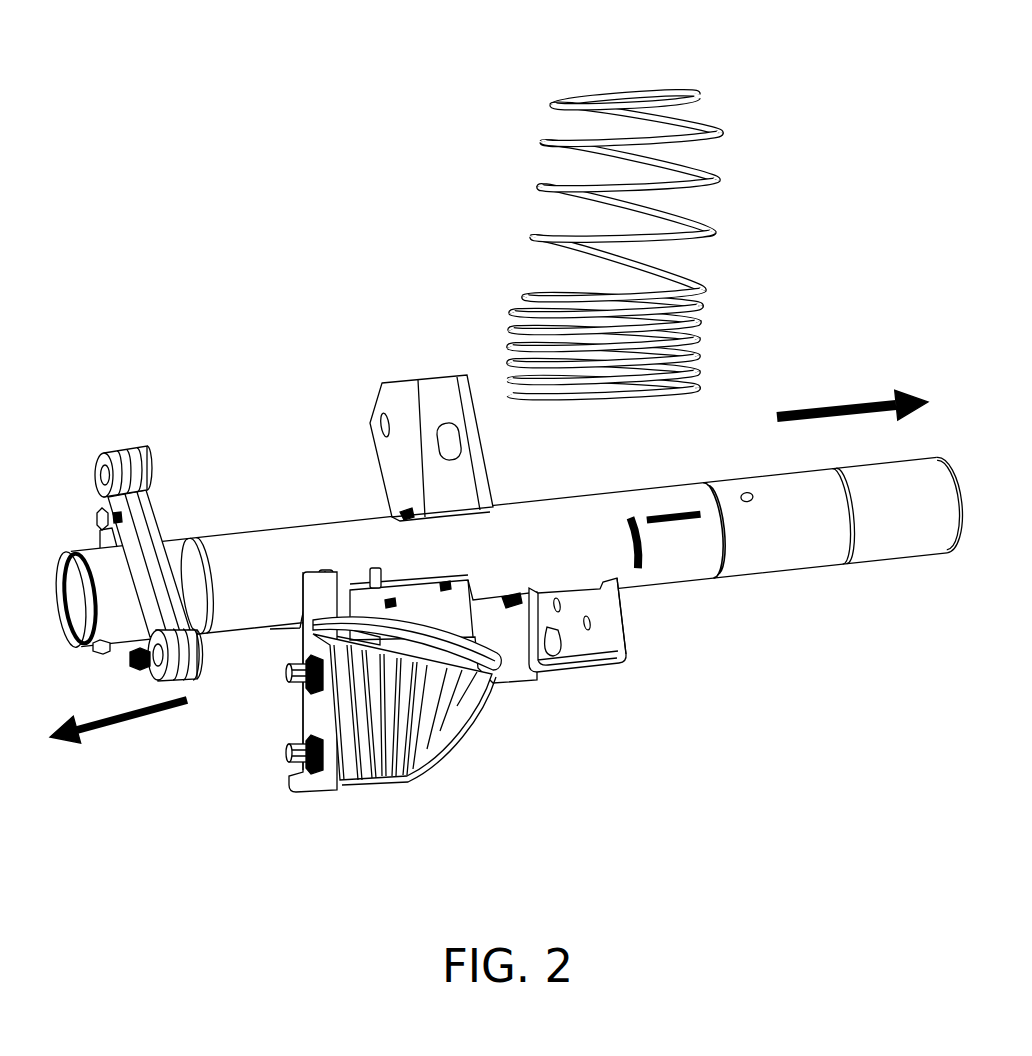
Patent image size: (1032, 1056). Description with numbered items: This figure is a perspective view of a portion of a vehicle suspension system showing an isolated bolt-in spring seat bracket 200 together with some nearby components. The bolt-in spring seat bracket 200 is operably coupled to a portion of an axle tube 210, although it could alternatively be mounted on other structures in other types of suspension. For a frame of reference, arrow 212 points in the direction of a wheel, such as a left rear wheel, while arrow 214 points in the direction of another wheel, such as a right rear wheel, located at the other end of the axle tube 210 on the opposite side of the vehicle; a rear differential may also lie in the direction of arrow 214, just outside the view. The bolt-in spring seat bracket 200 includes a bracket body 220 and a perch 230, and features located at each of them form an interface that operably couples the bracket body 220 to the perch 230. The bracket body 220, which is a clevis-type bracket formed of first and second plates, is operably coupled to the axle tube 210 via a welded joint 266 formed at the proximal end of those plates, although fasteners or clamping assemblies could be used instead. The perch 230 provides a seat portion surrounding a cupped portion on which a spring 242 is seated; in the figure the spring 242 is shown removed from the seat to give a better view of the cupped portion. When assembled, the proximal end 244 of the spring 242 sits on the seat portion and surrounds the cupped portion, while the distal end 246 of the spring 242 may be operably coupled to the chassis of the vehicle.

The bolt-in spring seat bracket 200 is at (508, 448).
The axle tube 210 is at (895, 553).
The arrow 212 is at (140, 717).
The arrow 214 is at (848, 408).
The bracket body 220 is at (313, 703).
The perch 230 is at (437, 705).
The spring 242 is at (665, 231).
The proximal end 244 is at (595, 367).
The distal end 246 is at (670, 90).
The welded joint 266 is at (313, 593).